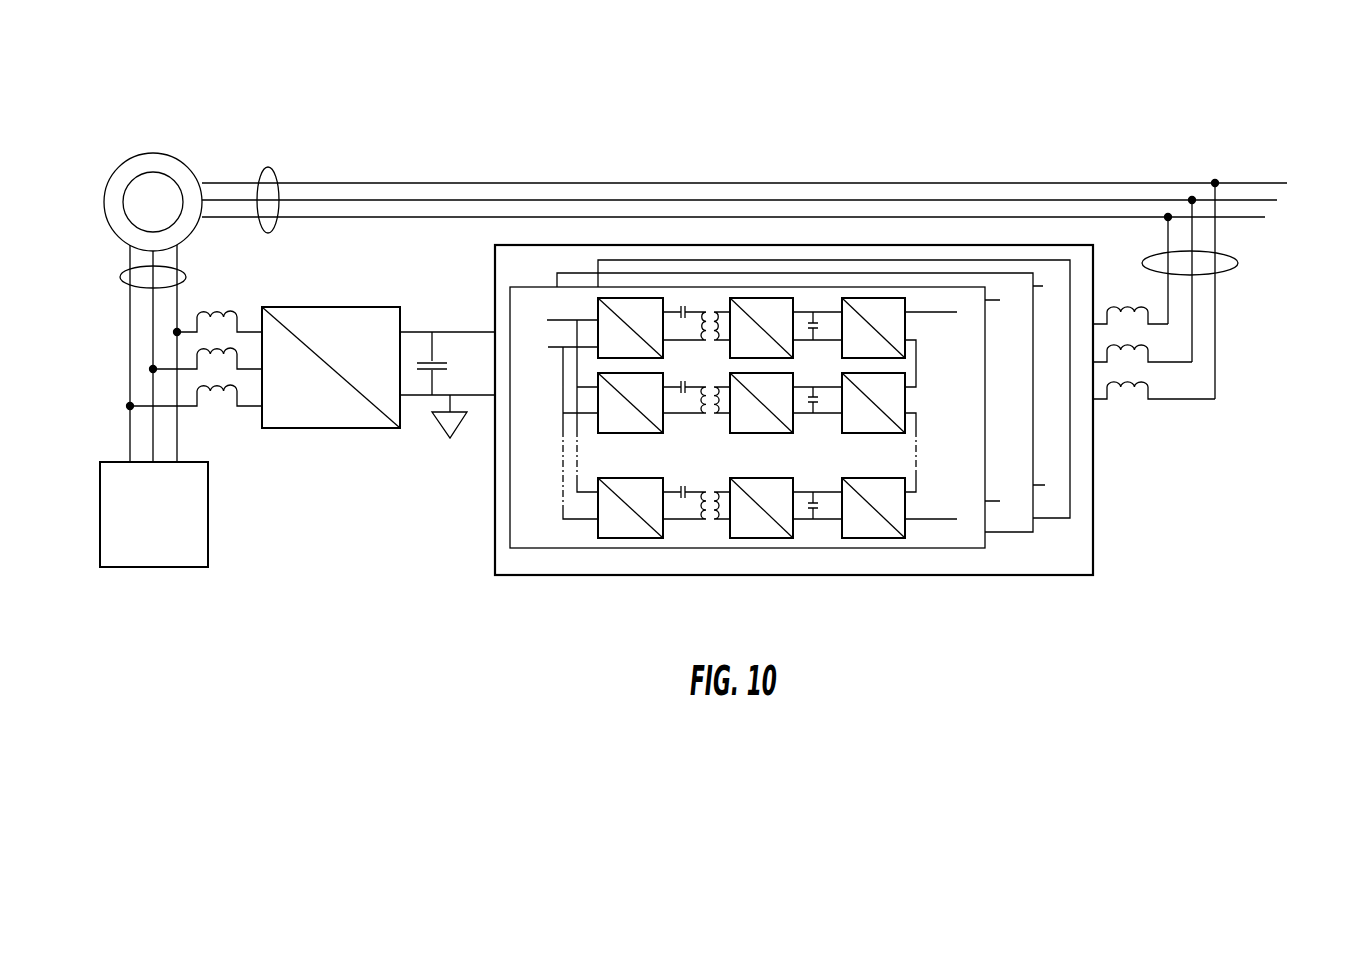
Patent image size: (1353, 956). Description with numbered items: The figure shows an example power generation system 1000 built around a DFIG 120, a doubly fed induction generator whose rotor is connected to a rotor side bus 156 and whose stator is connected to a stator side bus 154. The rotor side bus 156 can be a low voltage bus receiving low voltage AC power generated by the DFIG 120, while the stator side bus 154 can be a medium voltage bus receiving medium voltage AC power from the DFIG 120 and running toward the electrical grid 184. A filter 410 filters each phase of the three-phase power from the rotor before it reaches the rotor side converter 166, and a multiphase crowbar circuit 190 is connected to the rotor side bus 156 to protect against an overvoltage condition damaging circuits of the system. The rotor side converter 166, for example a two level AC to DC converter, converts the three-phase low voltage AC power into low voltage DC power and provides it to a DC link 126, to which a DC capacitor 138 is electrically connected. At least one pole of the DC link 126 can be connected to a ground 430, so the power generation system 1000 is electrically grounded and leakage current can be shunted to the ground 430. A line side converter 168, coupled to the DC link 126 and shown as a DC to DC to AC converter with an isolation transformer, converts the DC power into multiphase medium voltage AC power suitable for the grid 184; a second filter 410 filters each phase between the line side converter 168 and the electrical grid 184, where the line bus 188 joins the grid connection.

The power generation system 1000 is at (1048, 80).
The DFIG 120 is at (160, 153).
The stator side bus 154 is at (272, 170).
The rotor side bus 156 is at (122, 278).
The filter 410 is at (196, 313).
The multiphase crowbar circuit 190 is at (208, 500).
The rotor side converter 166 is at (350, 307).
The DC link 126 is at (412, 332).
The DC capacitor 138 is at (440, 363).
The ground 430 is at (447, 437).
The line side converter 168 is at (745, 577).
The electrical grid 184 is at (1292, 194).
The line bus 188 is at (1237, 263).